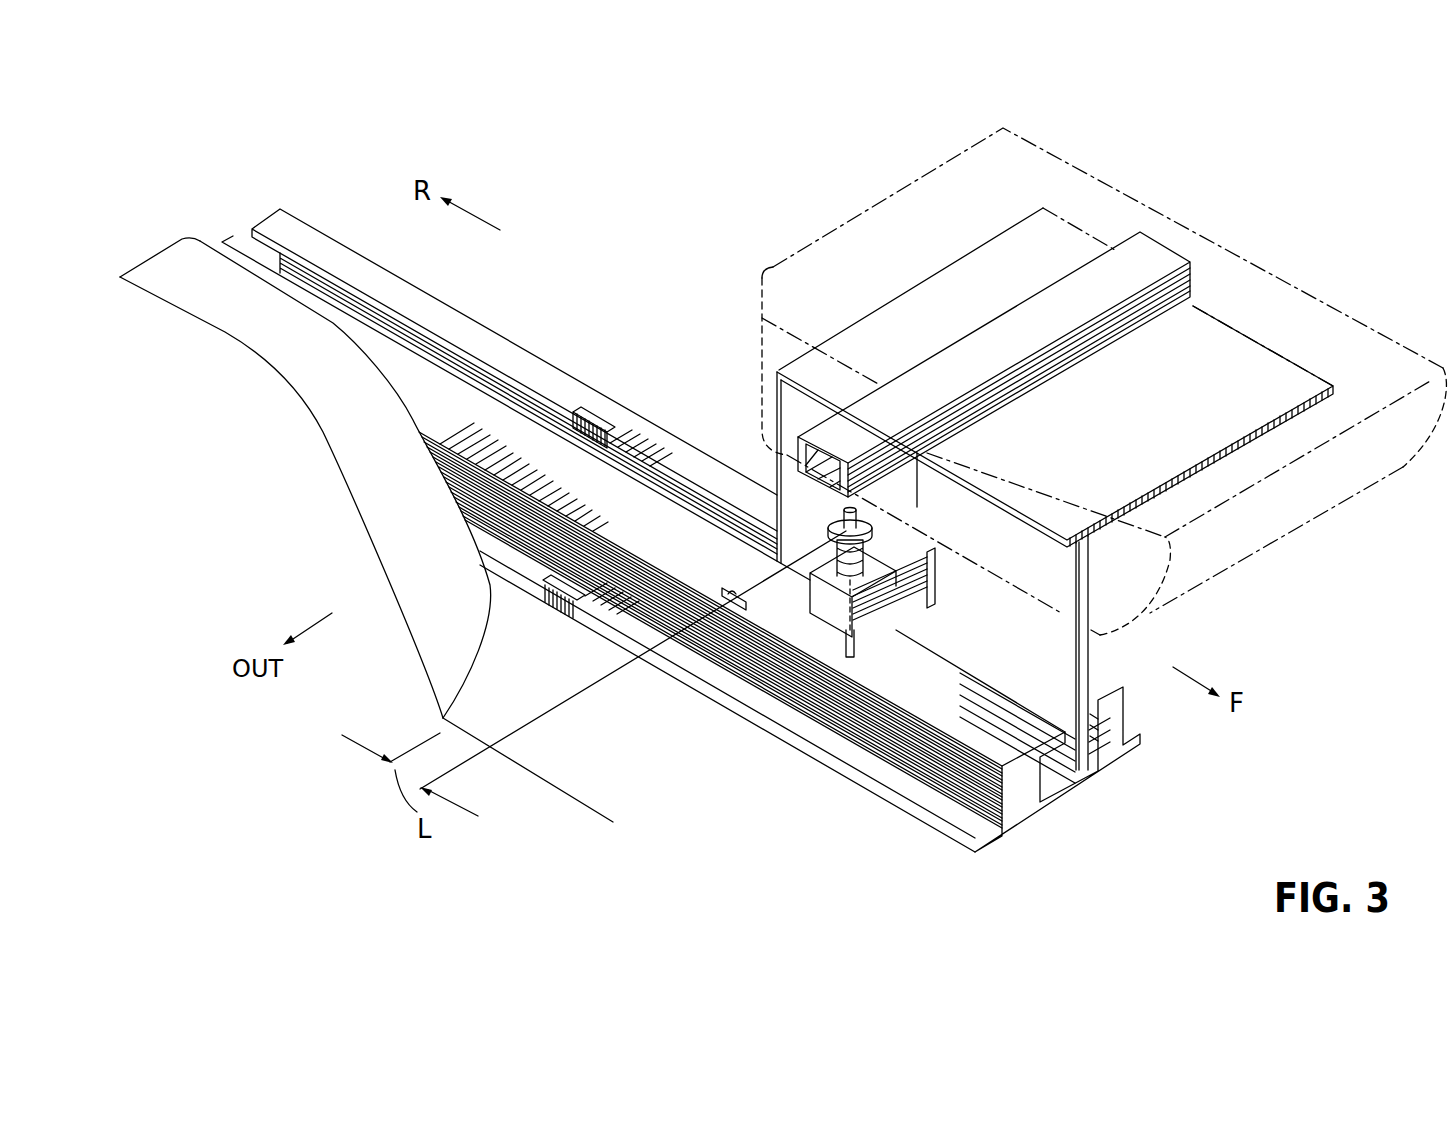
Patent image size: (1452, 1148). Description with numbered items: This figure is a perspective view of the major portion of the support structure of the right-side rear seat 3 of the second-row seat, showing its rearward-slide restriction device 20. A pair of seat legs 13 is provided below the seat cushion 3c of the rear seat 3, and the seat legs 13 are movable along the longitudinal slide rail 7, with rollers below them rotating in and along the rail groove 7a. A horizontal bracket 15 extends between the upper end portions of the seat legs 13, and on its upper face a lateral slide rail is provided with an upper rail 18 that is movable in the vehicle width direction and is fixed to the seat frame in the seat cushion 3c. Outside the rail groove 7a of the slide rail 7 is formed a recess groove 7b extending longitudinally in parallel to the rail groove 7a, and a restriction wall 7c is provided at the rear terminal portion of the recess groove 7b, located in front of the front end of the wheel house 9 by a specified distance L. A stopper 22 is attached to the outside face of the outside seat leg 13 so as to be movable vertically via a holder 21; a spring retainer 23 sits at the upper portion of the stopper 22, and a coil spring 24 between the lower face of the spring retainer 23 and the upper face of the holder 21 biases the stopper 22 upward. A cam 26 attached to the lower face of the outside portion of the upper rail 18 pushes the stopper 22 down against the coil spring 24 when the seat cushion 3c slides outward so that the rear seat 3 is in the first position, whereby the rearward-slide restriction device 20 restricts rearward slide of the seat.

The right-side rear seat 3 is at (962, 129).
The seat cushion 3c is at (792, 258).
The longitudinal slide rail 7 is at (681, 552).
The rail groove 7a is at (1055, 778).
The recess groove 7b is at (930, 713).
The restriction wall 7c is at (733, 596).
The wheel house 9 is at (390, 485).
The seat leg 13 is at (1093, 658).
The bracket 15 is at (1171, 418).
The upper rail 18 is at (1050, 300).
The rearward-slide restriction device 20 is at (788, 538).
The holder 21 is at (937, 597).
The stopper 22 is at (760, 685).
The spring retainer 23 is at (870, 514).
The coil spring 24 is at (868, 556).
The cam 26 is at (905, 483).